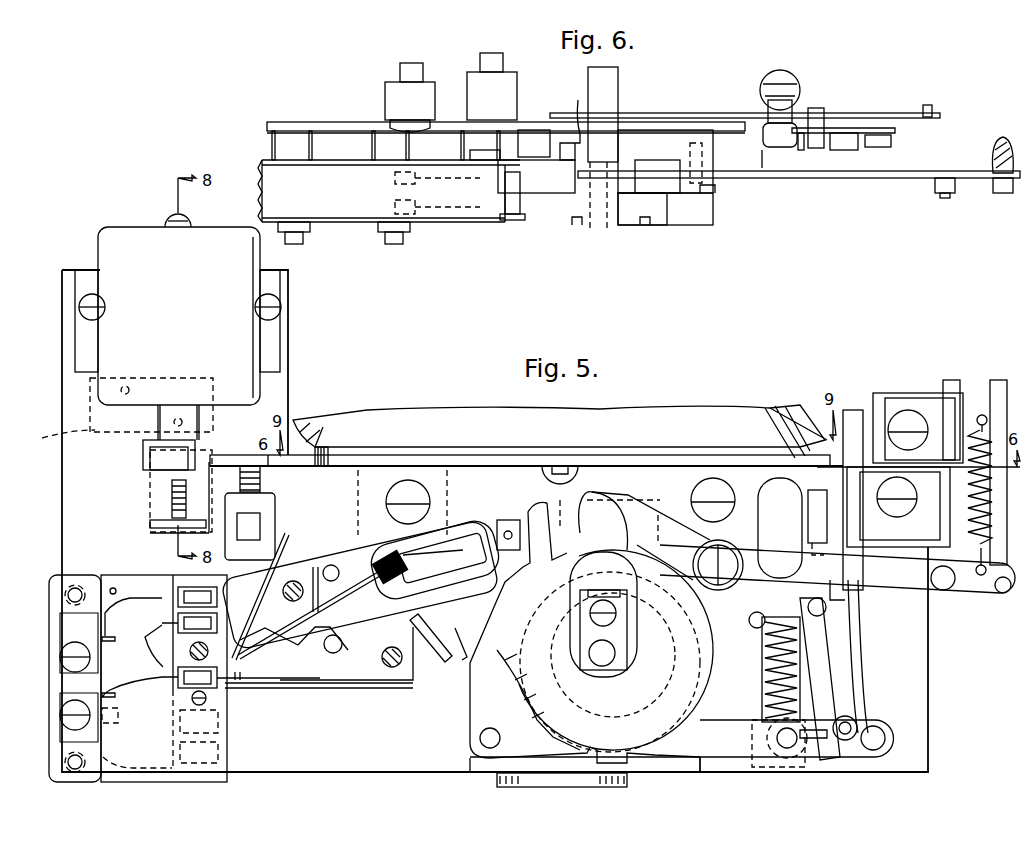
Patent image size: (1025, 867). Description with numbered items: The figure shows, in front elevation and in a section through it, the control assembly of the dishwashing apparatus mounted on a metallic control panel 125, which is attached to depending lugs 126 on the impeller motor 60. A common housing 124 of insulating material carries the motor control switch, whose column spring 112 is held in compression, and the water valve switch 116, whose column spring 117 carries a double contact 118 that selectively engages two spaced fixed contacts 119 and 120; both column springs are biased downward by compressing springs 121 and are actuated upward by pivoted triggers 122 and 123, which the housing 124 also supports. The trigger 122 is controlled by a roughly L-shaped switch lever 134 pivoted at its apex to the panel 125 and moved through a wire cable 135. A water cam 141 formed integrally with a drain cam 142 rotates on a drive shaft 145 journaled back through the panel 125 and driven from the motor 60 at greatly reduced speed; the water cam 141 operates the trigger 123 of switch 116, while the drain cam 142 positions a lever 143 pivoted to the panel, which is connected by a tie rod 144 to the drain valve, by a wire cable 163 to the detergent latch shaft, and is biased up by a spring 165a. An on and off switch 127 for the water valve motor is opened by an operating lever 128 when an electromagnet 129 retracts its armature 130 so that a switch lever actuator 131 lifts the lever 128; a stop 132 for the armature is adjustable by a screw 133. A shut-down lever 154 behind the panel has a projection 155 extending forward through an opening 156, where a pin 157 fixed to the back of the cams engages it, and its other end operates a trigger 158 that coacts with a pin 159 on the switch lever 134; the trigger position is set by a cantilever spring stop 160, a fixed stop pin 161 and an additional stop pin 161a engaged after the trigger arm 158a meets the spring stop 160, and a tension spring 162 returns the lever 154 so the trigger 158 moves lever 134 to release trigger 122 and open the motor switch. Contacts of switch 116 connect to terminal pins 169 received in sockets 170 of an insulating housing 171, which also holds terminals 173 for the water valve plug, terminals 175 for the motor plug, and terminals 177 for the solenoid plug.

In FIG. 5, the impeller motor 60 is at (400, 420).
In FIG. 5, the column spring 112 is at (389, 668).
In FIG. 5, the switch 116 is at (466, 524).
In FIG. 5, the column spring 117 is at (341, 586).
In FIG. 5, the double contact 118 is at (350, 611).
In FIG. 5, the fixed contact 119 is at (297, 572).
In FIG. 5, the fixed contact 120 is at (313, 648).
In FIG. 5, the compressing spring 121 is at (386, 555).
In FIG. 6, the trigger 122 is at (526, 176).
In FIG. 5, the trigger 122 is at (437, 662).
In FIG. 6, the trigger 123 is at (522, 206).
In FIG. 5, the trigger 123 is at (463, 672).
In FIG. 6, the housing 124 is at (358, 218).
In FIG. 5, the housing 124 is at (342, 550).
In FIG. 6, the control panel 125 is at (341, 123).
In FIG. 5, the control panel 125 is at (328, 770).
In FIG. 5, the depending lugs 126 is at (665, 458).
In FIG. 5, the on and off switch 127 is at (55, 438).
In FIG. 5, the operating lever 128 is at (150, 472).
In FIG. 5, the electromagnet 129 is at (98, 243).
In FIG. 5, the armature 130 is at (165, 422).
In FIG. 5, the switch lever actuator 131 is at (168, 514).
In FIG. 5, the stop 132 is at (152, 530).
In FIG. 5, the screw 133 is at (262, 482).
In FIG. 6, the switch lever 134 is at (900, 137).
In FIG. 5, the switch lever 134 is at (708, 752).
In FIG. 5, the wire cable 135 is at (866, 683).
In FIG. 6, the water cam 141 is at (656, 224).
In FIG. 5, the water cam 141 is at (636, 780).
In FIG. 6, the drain cam 142 is at (655, 166).
In FIG. 5, the drain cam 142 is at (505, 712).
In FIG. 6, the lever 143 is at (910, 179).
In FIG. 5, the lever 143 is at (972, 590).
In FIG. 6, the tie rod 144 is at (993, 152).
In FIG. 5, the tie rod 144 is at (990, 385).
In FIG. 6, the drive shaft 145 is at (620, 100).
In FIG. 5, the drive shaft 145 is at (606, 665).
In FIG. 6, the shut-down lever 154 is at (688, 113).
In FIG. 5, the shut-down lever 154 is at (662, 676).
In FIG. 6, the projection 155 is at (518, 150).
In FIG. 5, the projection 155 is at (588, 614).
In FIG. 5, the opening 156 is at (535, 568).
In FIG. 6, the pin 157 is at (574, 122).
In FIG. 5, the pin 157 is at (590, 620).
In FIG. 6, the trigger 158 is at (775, 124).
In FIG. 5, the trigger 158 is at (818, 688).
In FIG. 5, the trigger arm 158a is at (830, 597).
In FIG. 6, the pin 159 is at (801, 150).
In FIG. 5, the pin 159 is at (785, 750).
In FIG. 6, the stop 160 is at (815, 147).
In FIG. 5, the stop 160 is at (808, 505).
In FIG. 6, the stop 161 is at (836, 133).
In FIG. 5, the stop 161 is at (825, 612).
In FIG. 6, the stop pin 161a is at (762, 168).
In FIG. 5, the stop pin 161a is at (762, 627).
In FIG. 6, the tension spring 162 is at (800, 78).
In FIG. 5, the tension spring 162 is at (762, 712).
In FIG. 5, the wire cable 163 is at (965, 555).
In FIG. 5, the spring 165a is at (968, 518).
In FIG. 5, the terminal pins 169 is at (245, 712).
In FIG. 5, the sockets 170 is at (163, 667).
In FIG. 5, the insulating housing 171 is at (91, 575).
In FIG. 5, the terminals 173 is at (112, 637).
In FIG. 5, the terminals 175 is at (115, 740).
In FIG. 5, the terminals 177 is at (178, 728).